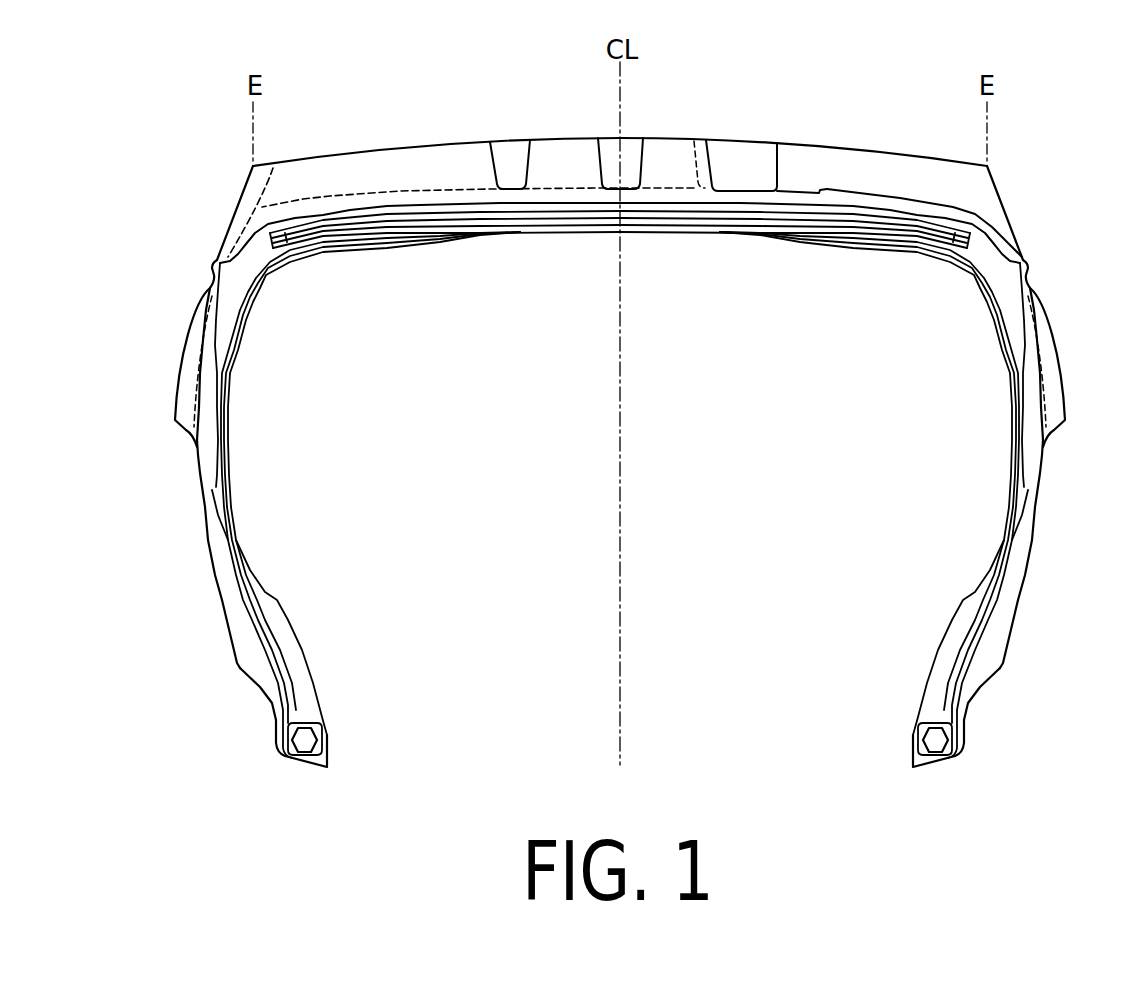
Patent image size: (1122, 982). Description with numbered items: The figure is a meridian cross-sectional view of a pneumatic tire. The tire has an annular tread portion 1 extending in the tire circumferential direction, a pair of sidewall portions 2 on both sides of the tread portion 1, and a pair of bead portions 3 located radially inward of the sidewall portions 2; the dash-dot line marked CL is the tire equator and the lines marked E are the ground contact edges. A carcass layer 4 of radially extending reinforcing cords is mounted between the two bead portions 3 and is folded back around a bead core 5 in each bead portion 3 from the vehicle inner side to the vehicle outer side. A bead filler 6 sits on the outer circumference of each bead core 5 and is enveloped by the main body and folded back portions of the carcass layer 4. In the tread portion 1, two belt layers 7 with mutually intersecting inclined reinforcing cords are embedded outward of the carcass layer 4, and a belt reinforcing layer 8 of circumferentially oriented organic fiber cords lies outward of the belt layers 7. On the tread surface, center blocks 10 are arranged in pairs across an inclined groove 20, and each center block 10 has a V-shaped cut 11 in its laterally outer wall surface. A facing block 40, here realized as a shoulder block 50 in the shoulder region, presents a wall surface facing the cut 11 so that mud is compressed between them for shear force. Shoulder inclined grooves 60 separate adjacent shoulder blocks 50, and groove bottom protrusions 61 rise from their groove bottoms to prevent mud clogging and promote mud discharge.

The tread portion 1 is at (716, 115).
The sidewall portion 2 is at (180, 466).
The bead portion 3 is at (262, 742).
The carcass layer 4 is at (960, 273).
The bead core 5 is at (305, 740).
The bead filler 6 is at (285, 663).
The belt layer 7 is at (713, 215).
The belt reinforcing layer 8 is at (855, 217).
The center block 10 is at (577, 137).
The cut 11 is at (523, 160).
The inclined groove 20 is at (632, 148).
The facing block 40 is at (620, 165).
The shoulder block 50 is at (372, 152).
The shoulder inclined groove 60 is at (437, 193).
The groove bottom protrusion 61 is at (262, 193).